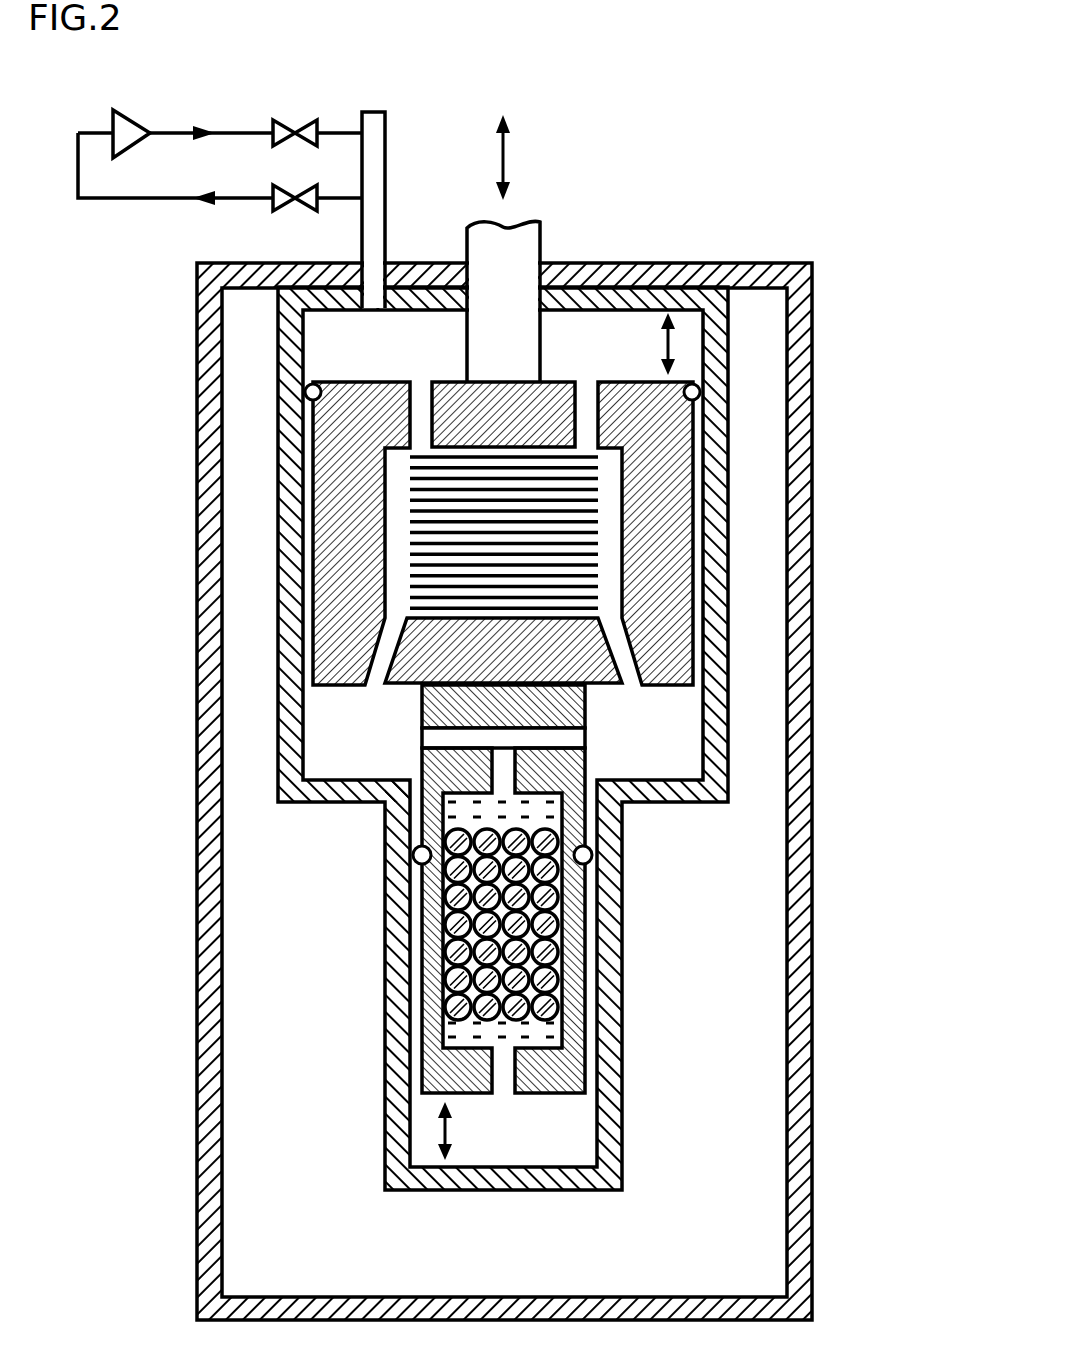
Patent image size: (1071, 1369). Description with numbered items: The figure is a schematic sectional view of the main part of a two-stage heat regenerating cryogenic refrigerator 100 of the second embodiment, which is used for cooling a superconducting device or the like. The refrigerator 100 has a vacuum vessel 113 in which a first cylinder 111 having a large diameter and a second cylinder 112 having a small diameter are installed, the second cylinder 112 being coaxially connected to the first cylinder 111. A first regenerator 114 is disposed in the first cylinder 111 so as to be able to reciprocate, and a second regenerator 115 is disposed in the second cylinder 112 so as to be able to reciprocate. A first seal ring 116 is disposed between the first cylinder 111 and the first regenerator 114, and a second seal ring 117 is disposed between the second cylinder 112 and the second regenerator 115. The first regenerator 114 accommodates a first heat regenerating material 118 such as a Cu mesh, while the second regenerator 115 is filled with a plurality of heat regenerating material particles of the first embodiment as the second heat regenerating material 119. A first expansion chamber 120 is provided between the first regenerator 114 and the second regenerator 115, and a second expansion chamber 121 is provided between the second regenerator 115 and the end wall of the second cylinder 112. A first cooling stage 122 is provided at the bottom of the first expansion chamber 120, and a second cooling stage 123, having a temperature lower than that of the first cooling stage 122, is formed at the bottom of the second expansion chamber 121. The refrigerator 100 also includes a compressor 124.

The heat regenerating cryogenic refrigerator 100 is at (862, 256).
The first cylinder 111 is at (293, 503).
The second cylinder 112 is at (383, 968).
The vacuum vessel 113 is at (208, 1123).
The first regenerator 114 is at (660, 563).
The second regenerator 115 is at (547, 1063).
The first seal ring 116 is at (700, 393).
The second seal ring 117 is at (592, 855).
The first heat regenerating material 118 is at (598, 488).
The second heat regenerating material 119 is at (547, 920).
The first expansion chamber 120 is at (655, 738).
The second expansion chamber 121 is at (540, 1137).
The first cooling stage 122 is at (687, 803).
The second cooling stage 123 is at (537, 1182).
The compressor 124 is at (125, 113).